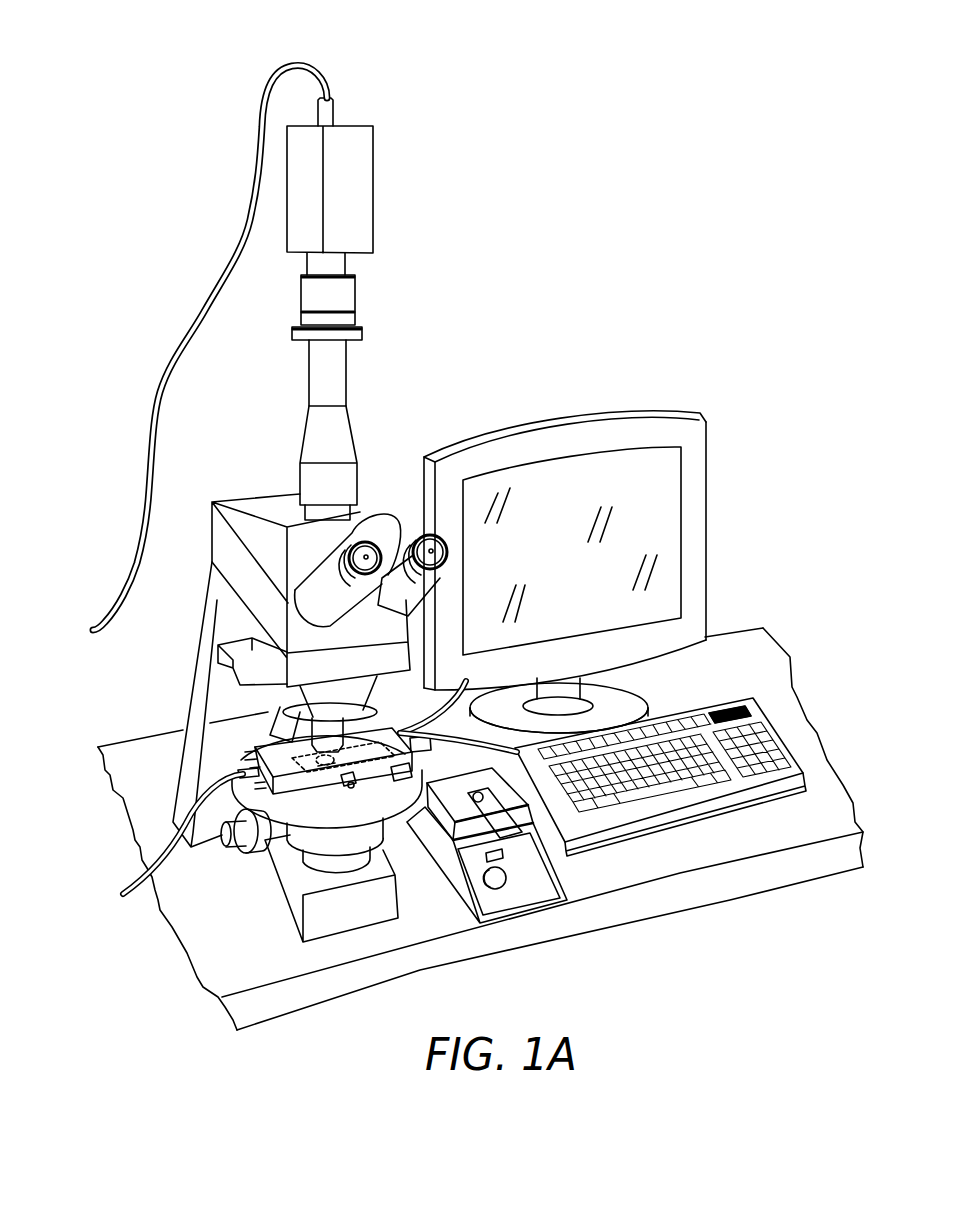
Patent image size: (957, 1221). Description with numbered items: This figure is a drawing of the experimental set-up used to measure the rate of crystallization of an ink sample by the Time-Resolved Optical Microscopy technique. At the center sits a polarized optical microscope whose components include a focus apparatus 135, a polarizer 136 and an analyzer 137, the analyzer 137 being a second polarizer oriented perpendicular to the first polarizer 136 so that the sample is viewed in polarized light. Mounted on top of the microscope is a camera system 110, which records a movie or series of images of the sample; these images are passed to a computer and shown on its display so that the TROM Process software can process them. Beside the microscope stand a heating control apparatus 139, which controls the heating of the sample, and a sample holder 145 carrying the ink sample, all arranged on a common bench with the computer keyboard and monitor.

The camera system 110 is at (365, 185).
The analyzer 137 is at (247, 575).
The polarizer 136 is at (290, 840).
The focus apparatus 135 is at (228, 837).
The heating control apparatus 139 is at (517, 895).
The sample holder 145 is at (537, 820).